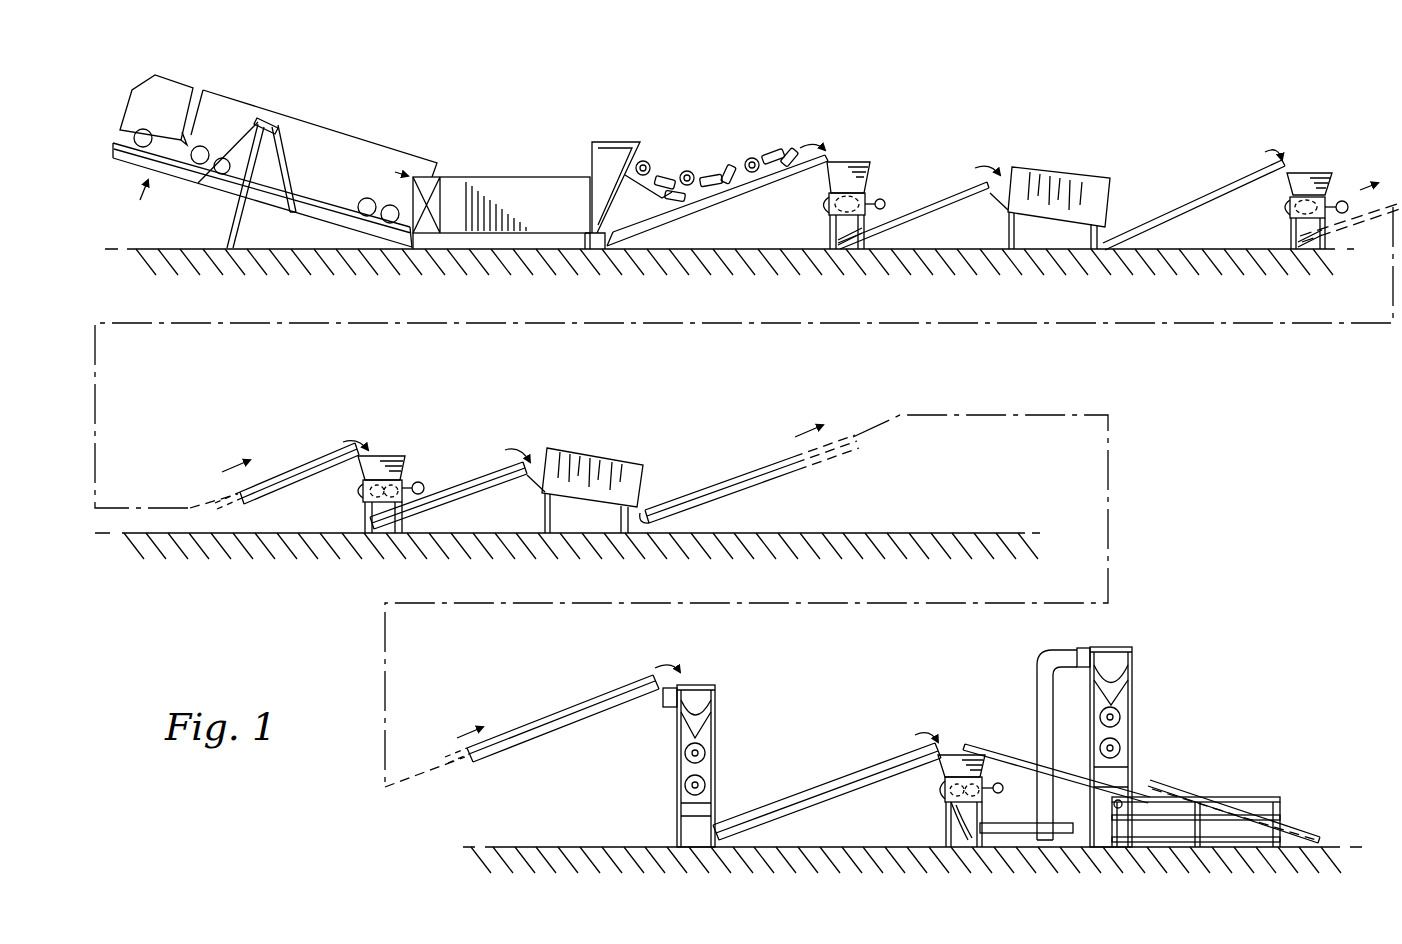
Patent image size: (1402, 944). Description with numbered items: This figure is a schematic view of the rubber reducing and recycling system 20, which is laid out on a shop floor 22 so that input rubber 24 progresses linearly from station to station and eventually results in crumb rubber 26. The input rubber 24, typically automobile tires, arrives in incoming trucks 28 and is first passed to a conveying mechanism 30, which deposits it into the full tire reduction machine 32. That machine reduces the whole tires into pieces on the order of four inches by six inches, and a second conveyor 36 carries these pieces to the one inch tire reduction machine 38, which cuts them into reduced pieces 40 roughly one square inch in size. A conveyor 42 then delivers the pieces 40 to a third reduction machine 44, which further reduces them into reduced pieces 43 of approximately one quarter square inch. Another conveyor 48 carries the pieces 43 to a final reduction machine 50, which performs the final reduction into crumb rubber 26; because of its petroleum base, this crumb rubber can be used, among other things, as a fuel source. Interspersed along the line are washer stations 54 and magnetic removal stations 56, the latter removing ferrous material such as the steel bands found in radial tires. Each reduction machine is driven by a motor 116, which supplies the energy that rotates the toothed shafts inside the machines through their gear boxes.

The rubber reducing and recycling system 20 is at (982, 110).
The shop floor 22 is at (472, 262).
The input rubber 24 is at (705, 150).
The crumb rubber 26 is at (1233, 790).
The incoming trucks 28 is at (335, 145).
The conveying mechanism 30 is at (742, 185).
The full tire reduction machine 32 is at (858, 162).
The second conveyor 36 is at (930, 205).
The one inch tire reduction machine 38 is at (1318, 170).
The reduced pieces 40 is at (297, 448).
The conveyor 42 is at (320, 465).
The reduced pieces 43 is at (466, 456).
The third reduction machine 44 is at (395, 455).
The conveyor 48 is at (820, 785).
The final reduction machine 50 is at (975, 755).
The washer station 54 is at (535, 185).
The magnetic removal station 56 is at (705, 695).
The motor 116 is at (882, 199).